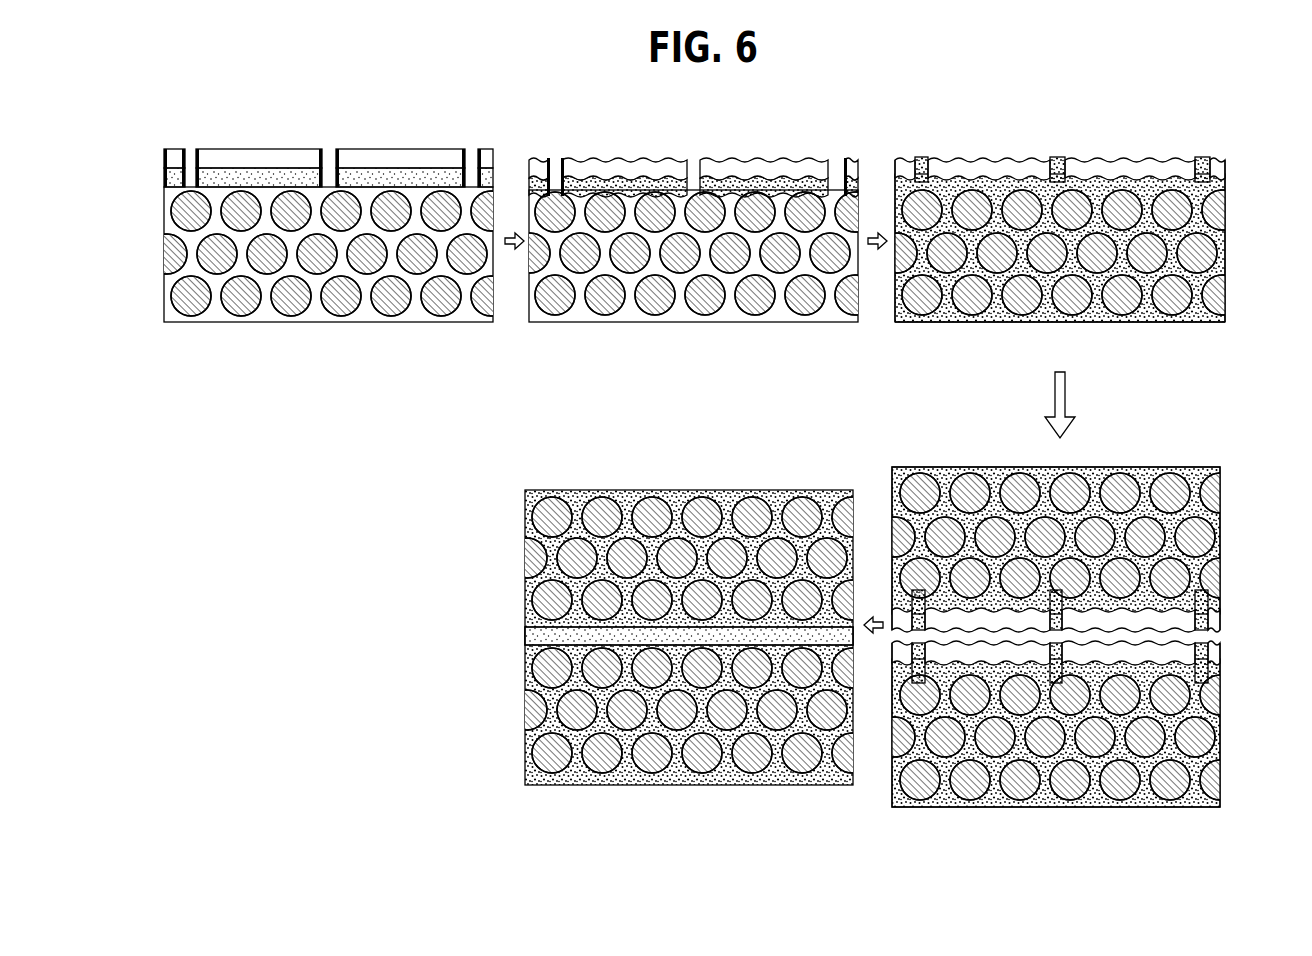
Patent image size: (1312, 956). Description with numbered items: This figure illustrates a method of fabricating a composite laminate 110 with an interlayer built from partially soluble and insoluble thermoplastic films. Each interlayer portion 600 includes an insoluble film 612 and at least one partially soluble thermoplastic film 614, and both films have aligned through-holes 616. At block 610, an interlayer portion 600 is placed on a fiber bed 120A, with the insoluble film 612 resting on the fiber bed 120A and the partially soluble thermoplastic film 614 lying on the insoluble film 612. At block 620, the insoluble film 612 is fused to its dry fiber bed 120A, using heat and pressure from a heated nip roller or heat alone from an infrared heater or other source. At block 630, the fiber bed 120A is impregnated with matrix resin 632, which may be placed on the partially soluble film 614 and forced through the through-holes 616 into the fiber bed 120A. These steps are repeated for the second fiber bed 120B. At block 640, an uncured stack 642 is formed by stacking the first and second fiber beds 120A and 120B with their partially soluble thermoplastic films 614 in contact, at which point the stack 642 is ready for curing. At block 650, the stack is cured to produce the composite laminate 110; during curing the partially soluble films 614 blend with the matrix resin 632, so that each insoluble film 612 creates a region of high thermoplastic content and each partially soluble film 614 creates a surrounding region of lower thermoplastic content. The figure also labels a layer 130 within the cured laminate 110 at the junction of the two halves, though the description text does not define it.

The composite laminate 110 is at (641, 609).
The fiber bed 120A is at (428, 322).
The second fiber bed 120B is at (1148, 472).
The bonding layer 130 is at (525, 633).
The interlayer portion 600 is at (301, 150).
The block 610 is at (308, 221).
The insoluble film 612 is at (262, 167).
The partially soluble thermoplastic film 614 is at (443, 150).
The through-holes 616 is at (334, 149).
The block 620 is at (623, 118).
The block 630 is at (1059, 203).
The matrix resin 632 is at (1062, 158).
The block 640 is at (1080, 615).
The uncured stack 642 is at (1238, 467).
The block 650 is at (641, 602).